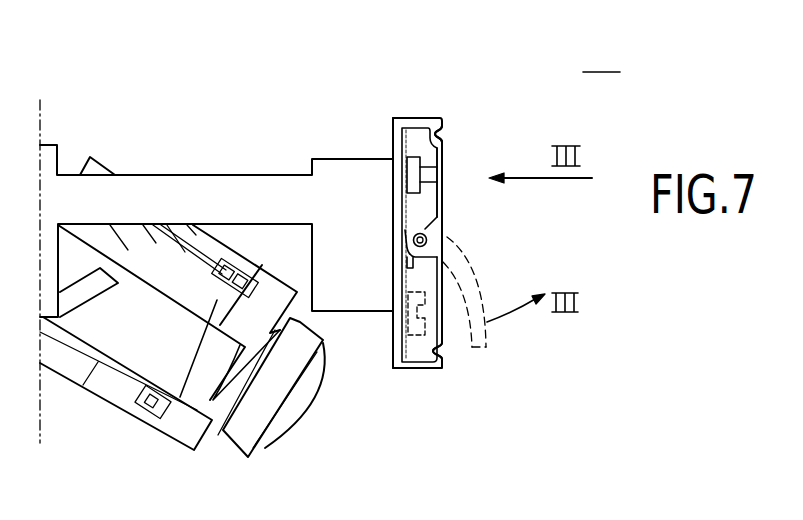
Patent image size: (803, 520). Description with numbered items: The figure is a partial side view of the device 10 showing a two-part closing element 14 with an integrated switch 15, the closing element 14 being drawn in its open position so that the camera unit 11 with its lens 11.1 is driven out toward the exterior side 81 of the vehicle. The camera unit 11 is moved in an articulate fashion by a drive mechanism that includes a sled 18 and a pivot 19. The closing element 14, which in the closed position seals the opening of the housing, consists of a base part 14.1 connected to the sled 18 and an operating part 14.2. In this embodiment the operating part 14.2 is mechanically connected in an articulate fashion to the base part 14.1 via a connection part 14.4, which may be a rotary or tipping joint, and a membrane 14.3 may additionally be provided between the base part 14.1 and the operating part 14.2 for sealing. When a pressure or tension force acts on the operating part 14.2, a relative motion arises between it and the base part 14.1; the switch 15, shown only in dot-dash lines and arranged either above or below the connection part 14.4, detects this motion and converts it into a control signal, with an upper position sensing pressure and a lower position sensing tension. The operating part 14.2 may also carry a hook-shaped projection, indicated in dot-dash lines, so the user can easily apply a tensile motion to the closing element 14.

The device 10 is at (154, 98).
The camera unit 11 is at (172, 455).
The lens 11.1 is at (302, 413).
The closing element 14 is at (455, 103).
The base part 14.1 is at (402, 333).
The operating part 14.2 is at (445, 155).
The membrane 14.3 is at (447, 128).
The connection part 14.4 is at (430, 231).
The switch 15 is at (410, 167).
The sled 18 is at (205, 183).
The pivot 19 is at (128, 338).
The exterior side 81 is at (601, 58).